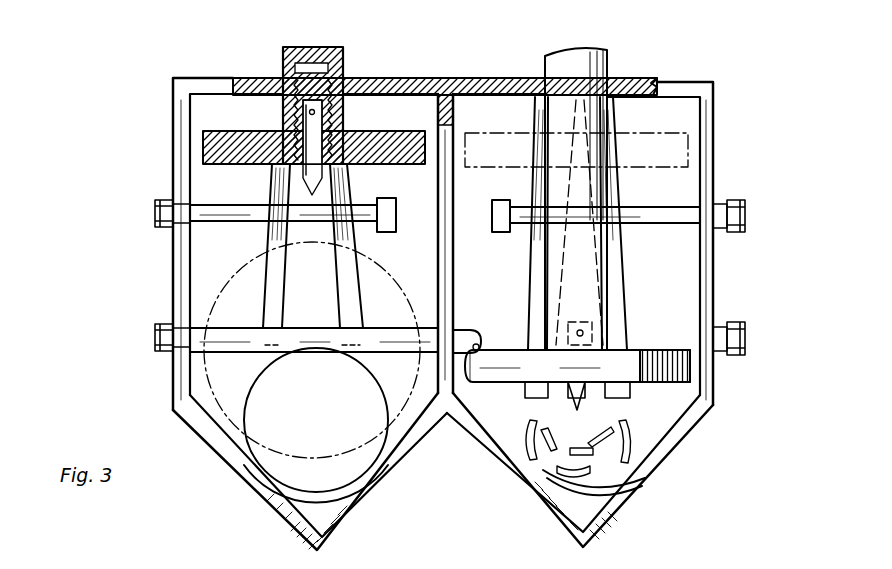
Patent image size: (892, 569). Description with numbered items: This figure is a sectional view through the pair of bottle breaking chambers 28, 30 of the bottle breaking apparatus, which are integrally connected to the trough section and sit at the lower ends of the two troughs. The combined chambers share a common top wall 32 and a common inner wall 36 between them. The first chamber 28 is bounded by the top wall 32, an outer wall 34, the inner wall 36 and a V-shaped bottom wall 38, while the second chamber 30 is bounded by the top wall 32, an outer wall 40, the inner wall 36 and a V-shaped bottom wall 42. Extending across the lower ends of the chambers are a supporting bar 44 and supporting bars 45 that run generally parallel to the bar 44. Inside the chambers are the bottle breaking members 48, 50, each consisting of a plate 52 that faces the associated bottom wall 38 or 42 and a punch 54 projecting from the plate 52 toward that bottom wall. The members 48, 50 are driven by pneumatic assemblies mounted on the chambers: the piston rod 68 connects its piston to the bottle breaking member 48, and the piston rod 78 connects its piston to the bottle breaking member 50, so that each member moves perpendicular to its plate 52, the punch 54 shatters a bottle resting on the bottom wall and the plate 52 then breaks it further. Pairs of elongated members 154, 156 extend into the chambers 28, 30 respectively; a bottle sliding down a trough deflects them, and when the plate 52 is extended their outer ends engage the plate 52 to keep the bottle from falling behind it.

The bottle breaking chamber 28 is at (672, 276).
The bottle breaking chamber 30 is at (281, 396).
The top wall 32 is at (459, 79).
The outer wall 34 is at (703, 156).
The inner wall 36 is at (447, 256).
The V-shaped bottom wall 38 is at (623, 483).
The outer wall 40 is at (178, 110).
The V-shaped bottom wall 42 is at (270, 488).
The supporting bar 44 is at (464, 342).
The supporting bars 45 is at (244, 206).
The bottle breaking member 48 is at (683, 388).
The bottle breaking member 50 is at (251, 106).
The plate 52 is at (205, 140).
The punch 54 is at (345, 167).
The piston rod 68 is at (610, 62).
The piston rod 78 is at (336, 53).
The elongated members 154 is at (543, 308).
The elongated members 156 is at (345, 300).